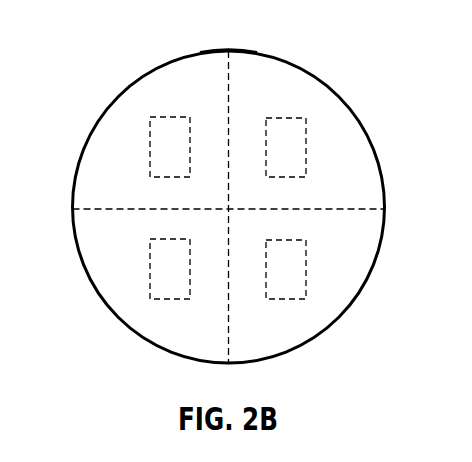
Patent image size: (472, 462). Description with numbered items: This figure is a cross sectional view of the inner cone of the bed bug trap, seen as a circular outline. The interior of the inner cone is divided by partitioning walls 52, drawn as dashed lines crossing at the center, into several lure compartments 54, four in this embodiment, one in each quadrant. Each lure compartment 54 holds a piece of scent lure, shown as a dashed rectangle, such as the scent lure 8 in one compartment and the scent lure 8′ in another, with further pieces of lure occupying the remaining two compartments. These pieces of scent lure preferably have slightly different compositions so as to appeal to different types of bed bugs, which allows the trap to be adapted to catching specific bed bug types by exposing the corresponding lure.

The partitioning walls 52 is at (231, 70).
The lure compartments 54 is at (205, 75).
The scent lure 8 is at (150, 150).
The scent lure 8′ is at (306, 168).